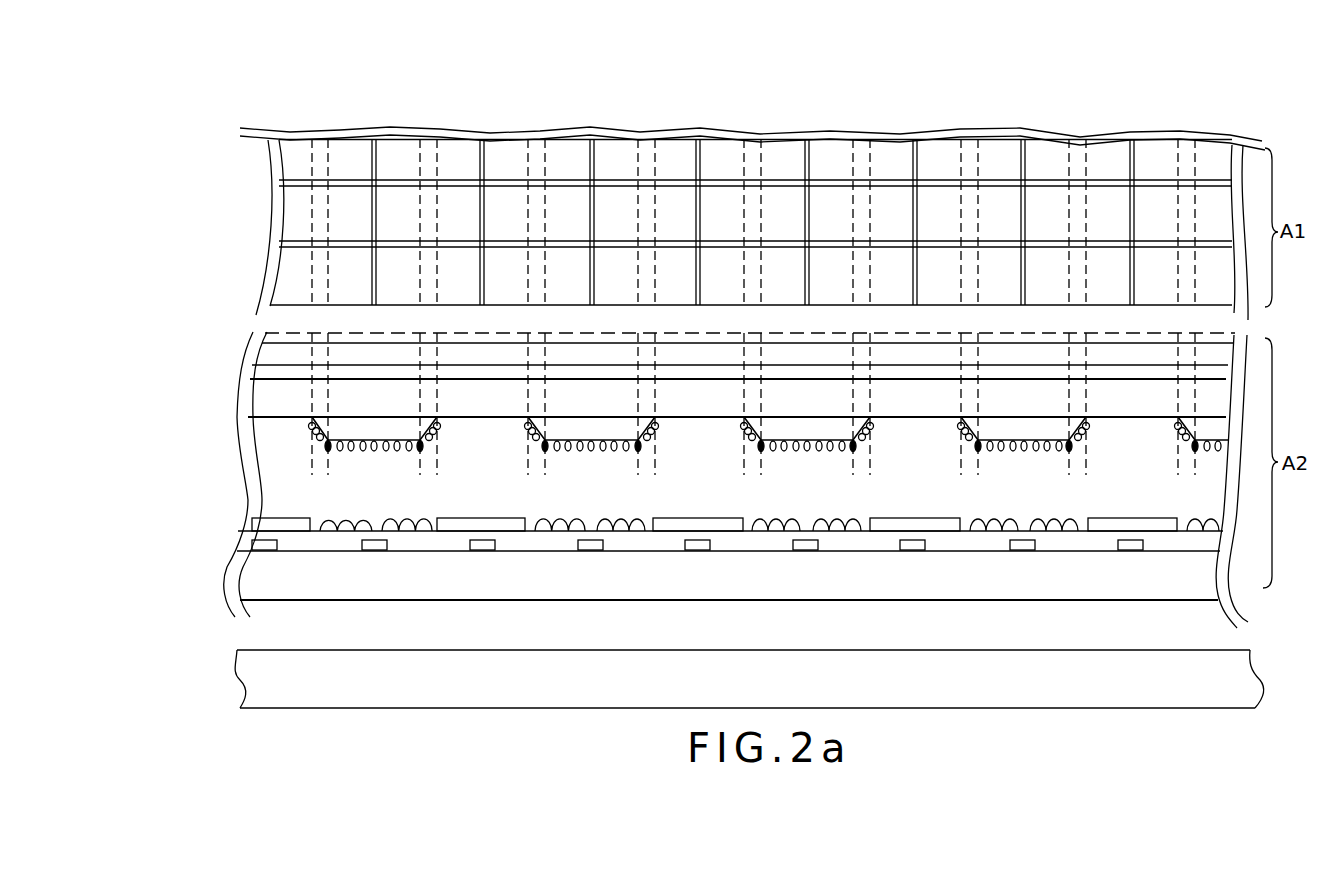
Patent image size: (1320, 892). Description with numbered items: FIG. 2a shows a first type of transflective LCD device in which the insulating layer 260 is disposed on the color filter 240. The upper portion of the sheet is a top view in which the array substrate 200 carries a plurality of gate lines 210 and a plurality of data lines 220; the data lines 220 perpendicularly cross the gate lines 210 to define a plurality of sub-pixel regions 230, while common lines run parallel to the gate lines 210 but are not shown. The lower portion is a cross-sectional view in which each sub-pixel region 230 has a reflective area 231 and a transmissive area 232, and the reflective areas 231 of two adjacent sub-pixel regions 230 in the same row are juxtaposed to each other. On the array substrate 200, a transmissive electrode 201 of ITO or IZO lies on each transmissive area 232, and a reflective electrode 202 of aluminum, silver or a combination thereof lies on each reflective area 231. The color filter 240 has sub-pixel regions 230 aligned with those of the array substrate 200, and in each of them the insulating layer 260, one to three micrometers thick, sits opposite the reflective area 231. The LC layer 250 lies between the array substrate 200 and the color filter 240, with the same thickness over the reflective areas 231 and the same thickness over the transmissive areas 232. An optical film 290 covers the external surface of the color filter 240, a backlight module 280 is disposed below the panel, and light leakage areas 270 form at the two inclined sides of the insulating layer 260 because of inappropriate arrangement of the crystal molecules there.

The array substrate 200 is at (212, 551).
The transmissive electrode 201 is at (680, 531).
The reflective electrode 202 is at (565, 532).
The gate line 210 is at (378, 118).
The data line 220 is at (272, 184).
The sub-pixel region 230 is at (570, 145).
The reflective area 231 is at (782, 338).
The transmissive area 232 is at (723, 335).
The color filter 240 is at (218, 397).
The LC layer 250 is at (1213, 502).
The insulating layer 260 is at (818, 425).
The light leakage area 270 is at (541, 140).
The backlight module 280 is at (1206, 693).
The optical film 290 is at (1100, 378).